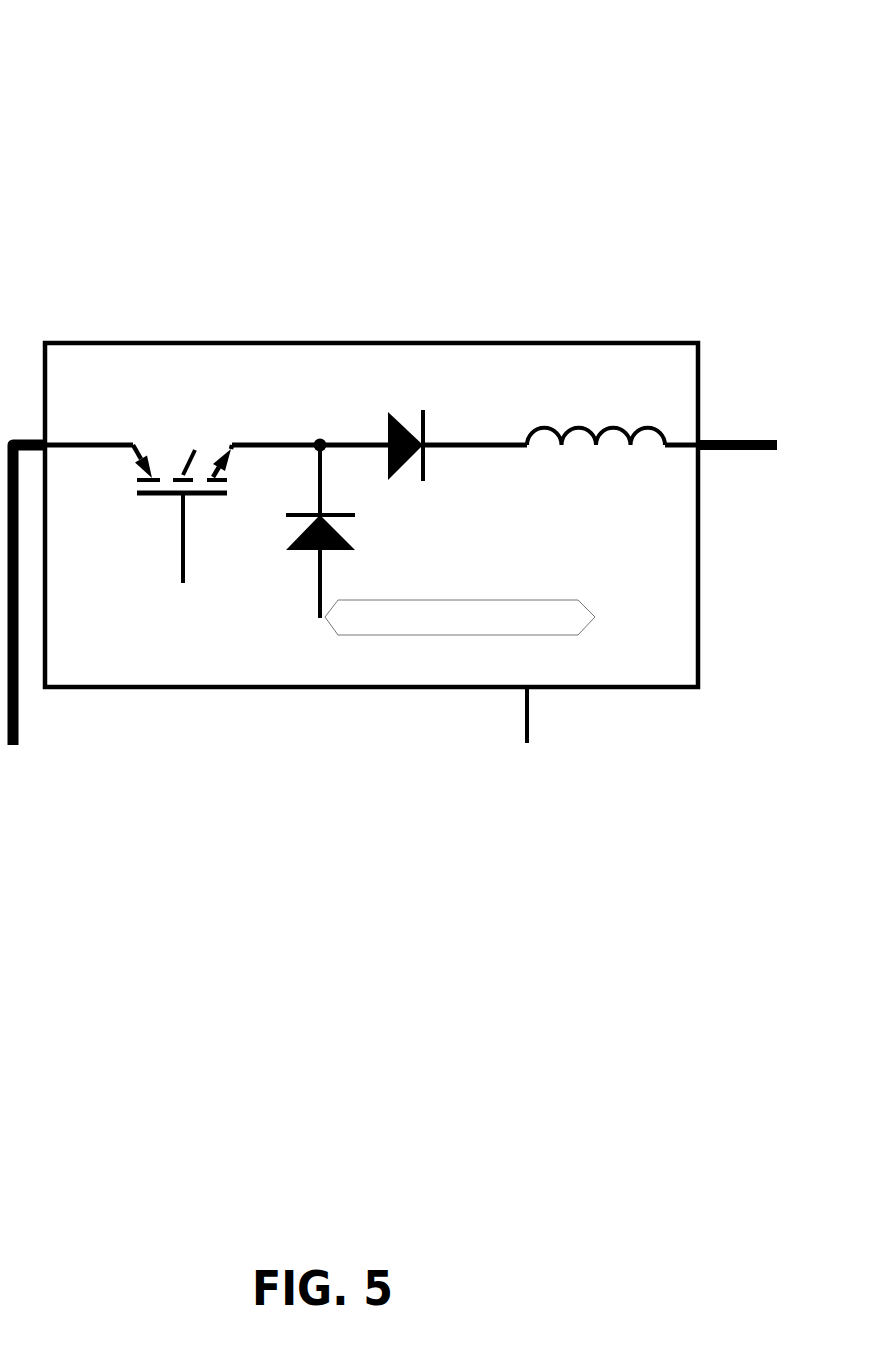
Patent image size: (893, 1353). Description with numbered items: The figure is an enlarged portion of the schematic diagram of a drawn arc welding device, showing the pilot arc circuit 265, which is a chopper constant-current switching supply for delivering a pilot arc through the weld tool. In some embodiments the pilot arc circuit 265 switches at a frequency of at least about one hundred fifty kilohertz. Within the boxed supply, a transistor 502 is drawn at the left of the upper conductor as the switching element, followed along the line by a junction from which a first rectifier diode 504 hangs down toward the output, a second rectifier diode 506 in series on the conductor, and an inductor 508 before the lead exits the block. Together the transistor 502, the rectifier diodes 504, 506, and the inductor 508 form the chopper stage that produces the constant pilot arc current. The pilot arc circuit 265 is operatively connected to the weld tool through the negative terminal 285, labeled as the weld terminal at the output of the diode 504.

The pilot arc circuit 265 is at (134, 60).
The transistor 502 is at (170, 420).
The rectifier diode 504 is at (291, 579).
The rectifier diode 506 is at (419, 507).
The inductor 508 is at (619, 501).
The negative terminal 285 is at (556, 656).